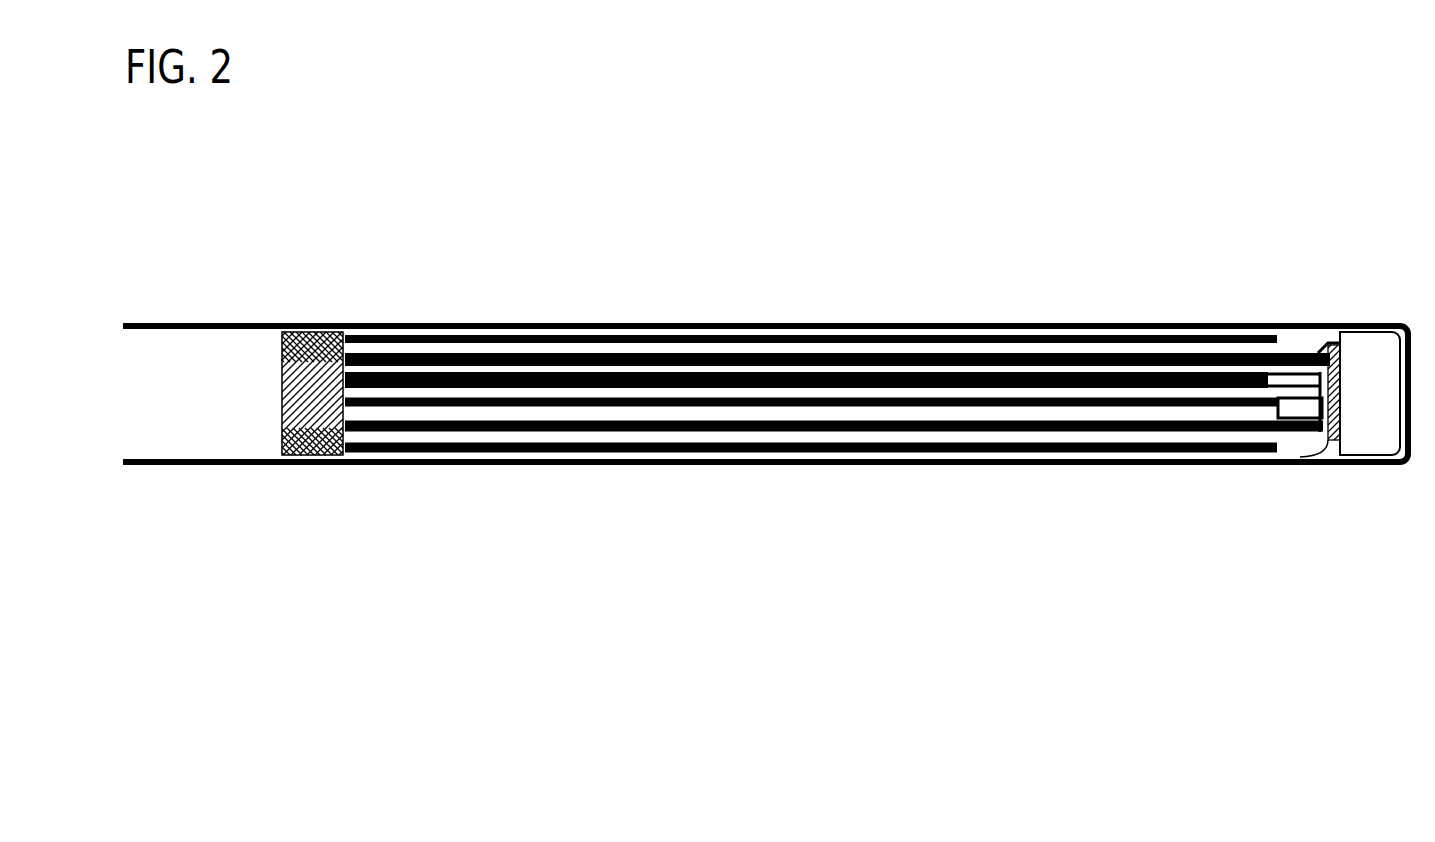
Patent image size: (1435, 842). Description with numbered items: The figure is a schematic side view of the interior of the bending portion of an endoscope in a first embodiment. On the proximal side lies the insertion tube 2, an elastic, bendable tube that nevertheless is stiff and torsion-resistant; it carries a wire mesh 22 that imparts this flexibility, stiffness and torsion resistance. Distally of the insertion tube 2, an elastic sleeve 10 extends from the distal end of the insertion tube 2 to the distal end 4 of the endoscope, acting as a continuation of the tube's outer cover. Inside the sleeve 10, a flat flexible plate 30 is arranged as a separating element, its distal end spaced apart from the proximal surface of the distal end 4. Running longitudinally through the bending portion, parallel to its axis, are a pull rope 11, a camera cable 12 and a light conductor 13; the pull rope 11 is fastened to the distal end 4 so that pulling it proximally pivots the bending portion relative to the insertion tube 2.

The insertion tube 2 is at (212, 366).
The wire mesh 22 is at (303, 350).
The elastic sleeve 10 is at (448, 325).
The light conductor 13 is at (1010, 360).
The pull rope 11 is at (925, 380).
The camera cable 12 is at (630, 415).
The flexible plate 30 is at (500, 437).
The distal end 4 is at (1377, 353).